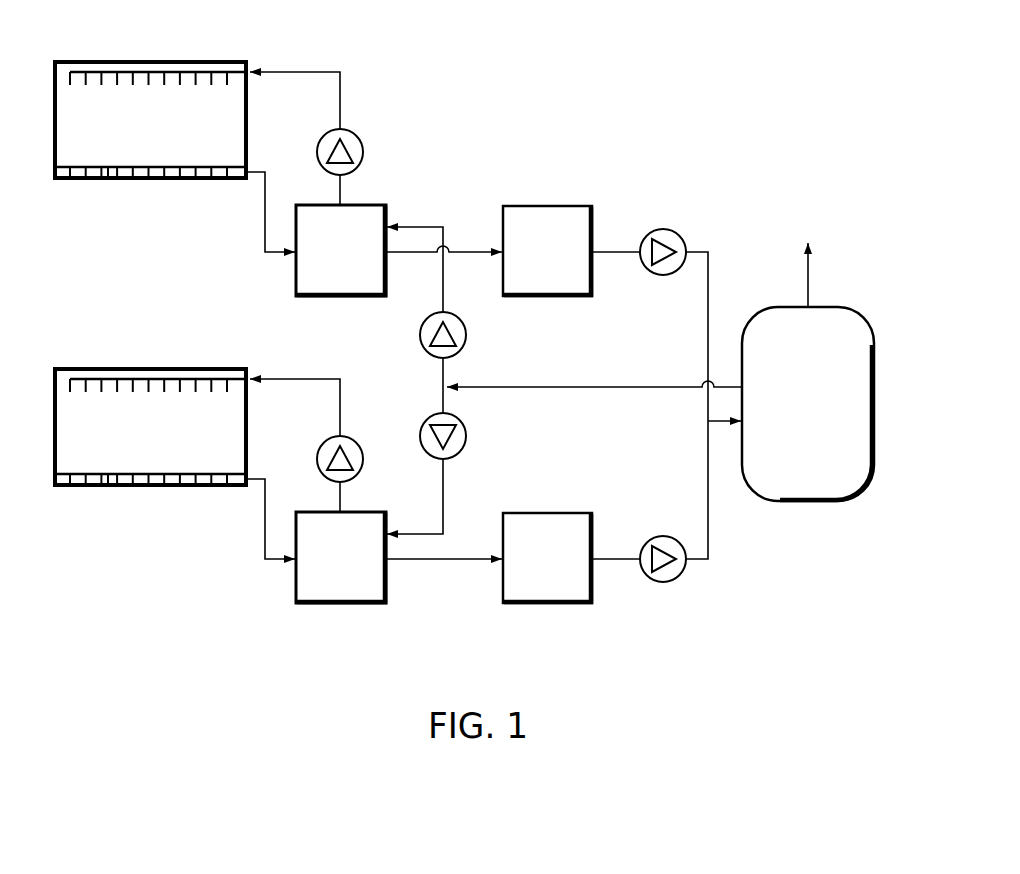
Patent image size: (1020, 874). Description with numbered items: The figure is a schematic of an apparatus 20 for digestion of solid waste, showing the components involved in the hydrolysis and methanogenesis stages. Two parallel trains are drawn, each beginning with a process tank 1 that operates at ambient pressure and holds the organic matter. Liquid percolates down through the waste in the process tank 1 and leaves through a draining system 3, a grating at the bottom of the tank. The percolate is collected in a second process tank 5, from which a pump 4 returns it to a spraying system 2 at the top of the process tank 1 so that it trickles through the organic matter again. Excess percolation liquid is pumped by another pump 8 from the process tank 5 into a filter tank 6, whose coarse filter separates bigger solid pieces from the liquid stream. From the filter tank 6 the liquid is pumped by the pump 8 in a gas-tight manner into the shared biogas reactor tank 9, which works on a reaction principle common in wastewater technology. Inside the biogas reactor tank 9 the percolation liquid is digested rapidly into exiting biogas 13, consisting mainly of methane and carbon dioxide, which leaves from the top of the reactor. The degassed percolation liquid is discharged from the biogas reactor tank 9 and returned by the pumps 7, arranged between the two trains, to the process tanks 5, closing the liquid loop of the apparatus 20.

The process tank 1 is at (158, 60).
The spraying system 2 is at (103, 72).
The draining system 3 is at (107, 182).
The pump 4 is at (357, 138).
The process tank 5 is at (378, 204).
The filter tank 6 is at (548, 205).
The pump 7 is at (466, 333).
The pump 8 is at (653, 230).
The biogas reactor tank 9 is at (797, 502).
The exiting biogas 13 is at (806, 278).
The apparatus 20 is at (652, 56).